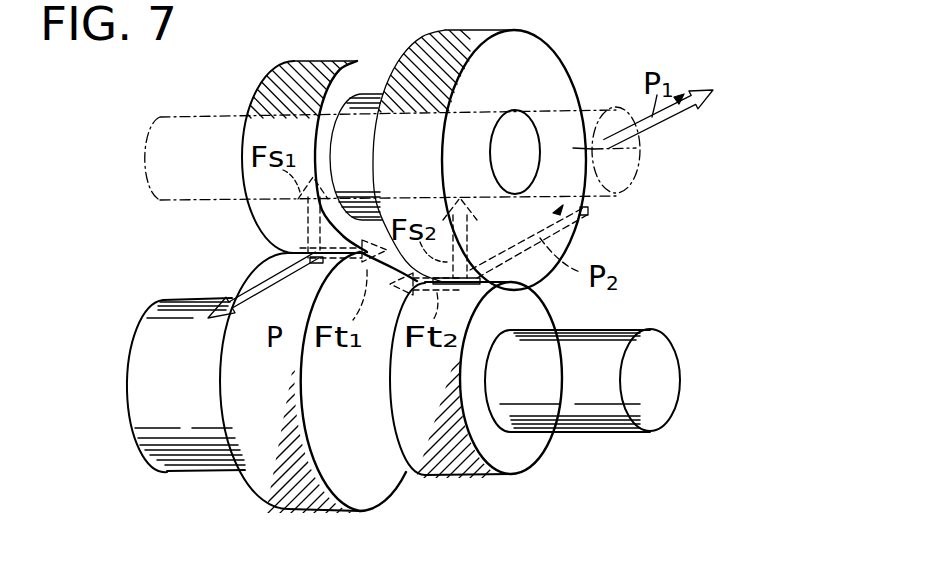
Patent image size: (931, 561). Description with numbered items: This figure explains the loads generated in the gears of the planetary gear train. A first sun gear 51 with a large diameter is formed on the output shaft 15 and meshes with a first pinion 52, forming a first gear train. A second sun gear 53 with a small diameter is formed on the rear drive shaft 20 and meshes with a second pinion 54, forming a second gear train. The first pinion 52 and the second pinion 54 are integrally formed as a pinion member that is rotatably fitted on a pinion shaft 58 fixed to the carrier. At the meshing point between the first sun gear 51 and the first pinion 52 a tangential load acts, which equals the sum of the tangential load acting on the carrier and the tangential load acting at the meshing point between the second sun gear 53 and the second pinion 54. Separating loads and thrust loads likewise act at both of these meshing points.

The output shaft 15 is at (152, 474).
The rear drive shaft 20 is at (657, 422).
The first sun gear 51 is at (300, 505).
The first pinion 52 is at (303, 62).
The second sun gear 53 is at (465, 473).
The second pinion 54 is at (555, 68).
The pinion shaft 58 is at (625, 178).